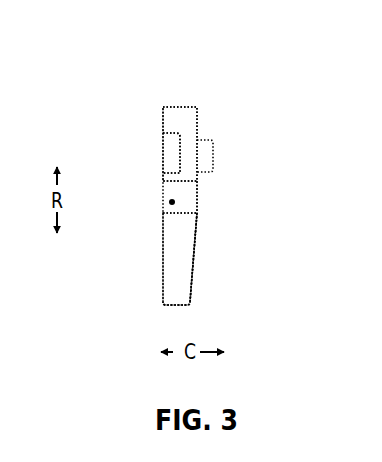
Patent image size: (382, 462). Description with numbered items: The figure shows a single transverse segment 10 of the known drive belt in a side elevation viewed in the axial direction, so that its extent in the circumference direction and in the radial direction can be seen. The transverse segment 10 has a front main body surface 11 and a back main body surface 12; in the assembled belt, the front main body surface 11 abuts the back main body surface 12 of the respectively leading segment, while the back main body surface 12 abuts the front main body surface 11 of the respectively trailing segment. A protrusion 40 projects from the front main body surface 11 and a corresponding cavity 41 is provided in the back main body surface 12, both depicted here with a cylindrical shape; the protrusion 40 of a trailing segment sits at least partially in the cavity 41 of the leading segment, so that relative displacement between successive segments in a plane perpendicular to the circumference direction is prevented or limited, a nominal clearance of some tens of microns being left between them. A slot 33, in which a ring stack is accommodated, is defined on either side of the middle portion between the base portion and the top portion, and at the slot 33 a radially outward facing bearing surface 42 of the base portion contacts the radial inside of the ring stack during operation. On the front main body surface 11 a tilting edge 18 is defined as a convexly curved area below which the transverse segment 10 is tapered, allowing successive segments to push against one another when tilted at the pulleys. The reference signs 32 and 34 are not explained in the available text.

The transverse segment 10 is at (181, 116).
The front main body surface 11 is at (203, 120).
The back main body surface 12 is at (158, 124).
The tilting edge 18 is at (205, 231).
The first region 32 is at (107, 119).
The slot 33 is at (168, 202).
The lower portion 34 is at (191, 276).
The protrusion 40 is at (208, 156).
The cavity 41 is at (163, 148).
The bearing surface 42 is at (183, 218).